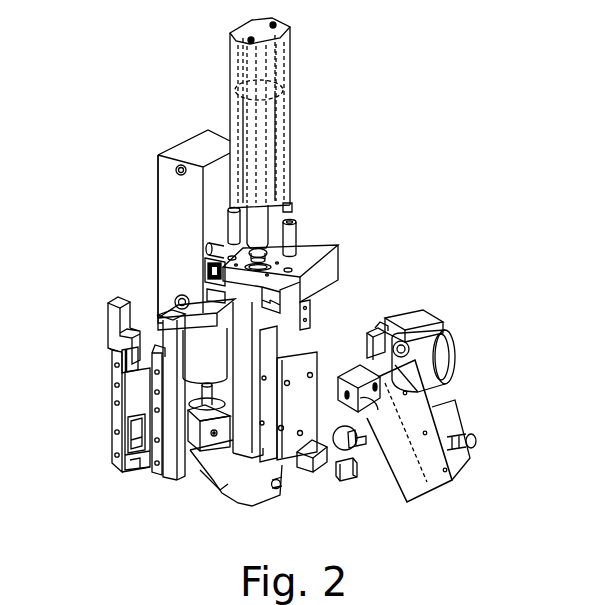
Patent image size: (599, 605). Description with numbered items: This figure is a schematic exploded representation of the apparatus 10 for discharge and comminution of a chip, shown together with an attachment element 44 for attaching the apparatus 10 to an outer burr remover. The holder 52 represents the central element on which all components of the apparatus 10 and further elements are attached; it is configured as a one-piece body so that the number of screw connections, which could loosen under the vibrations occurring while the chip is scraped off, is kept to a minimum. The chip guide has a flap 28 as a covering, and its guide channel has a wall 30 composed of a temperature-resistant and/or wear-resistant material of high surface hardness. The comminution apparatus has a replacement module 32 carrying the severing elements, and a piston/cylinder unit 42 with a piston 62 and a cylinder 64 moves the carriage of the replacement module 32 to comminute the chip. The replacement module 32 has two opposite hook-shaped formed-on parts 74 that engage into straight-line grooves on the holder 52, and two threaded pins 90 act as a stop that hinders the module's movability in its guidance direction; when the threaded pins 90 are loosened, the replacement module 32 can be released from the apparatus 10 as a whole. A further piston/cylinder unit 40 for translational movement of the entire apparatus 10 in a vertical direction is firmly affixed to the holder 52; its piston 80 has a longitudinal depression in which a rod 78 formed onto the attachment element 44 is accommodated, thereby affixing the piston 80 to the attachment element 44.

The apparatus for discharge and comminution of a chip 10 is at (352, 120).
The flap 28 is at (450, 423).
The wall 30 is at (340, 452).
The replacement module 32 is at (98, 480).
The piston/cylinder unit 40 is at (155, 112).
The piston/cylinder unit 42 is at (200, 90).
The attachment element 44 is at (263, 487).
The holder 52 is at (340, 258).
The piston 62 is at (266, 230).
The cylinder 64 is at (283, 52).
The hook-shaped formed-on parts 74 is at (115, 299).
The rod 78 is at (197, 410).
The piston 80 is at (120, 362).
The threaded pins 90 is at (229, 222).